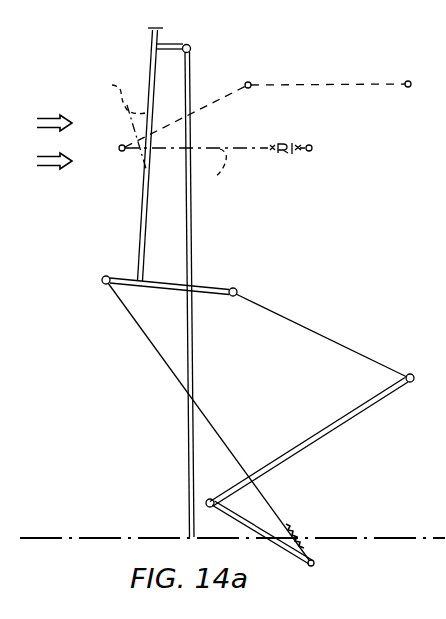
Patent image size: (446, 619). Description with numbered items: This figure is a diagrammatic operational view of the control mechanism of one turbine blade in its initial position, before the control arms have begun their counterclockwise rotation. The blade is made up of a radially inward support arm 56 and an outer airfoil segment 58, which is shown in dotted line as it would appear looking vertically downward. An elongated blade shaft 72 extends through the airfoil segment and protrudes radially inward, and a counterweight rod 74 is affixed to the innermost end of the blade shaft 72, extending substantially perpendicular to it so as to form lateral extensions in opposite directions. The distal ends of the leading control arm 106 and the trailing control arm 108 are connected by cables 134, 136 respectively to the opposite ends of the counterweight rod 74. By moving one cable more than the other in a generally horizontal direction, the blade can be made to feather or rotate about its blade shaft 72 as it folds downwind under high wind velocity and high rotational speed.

The support arm 56 is at (193, 250).
The airfoil segment 58 is at (115, 121).
The blade shaft 72 is at (139, 229).
The counterweight rod 74 is at (158, 291).
The leading control arm 106 is at (358, 420).
The trailing control arm 108 is at (281, 551).
The cable 134 is at (371, 84).
The cable 136 is at (224, 430).